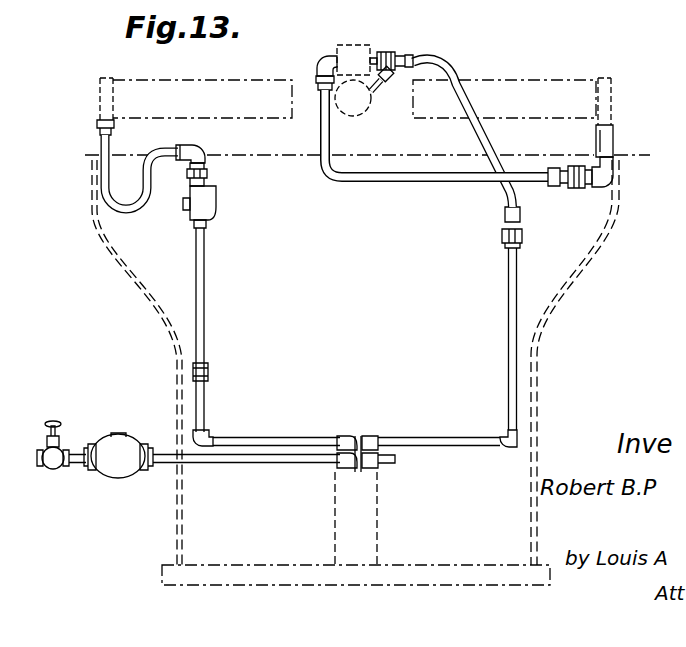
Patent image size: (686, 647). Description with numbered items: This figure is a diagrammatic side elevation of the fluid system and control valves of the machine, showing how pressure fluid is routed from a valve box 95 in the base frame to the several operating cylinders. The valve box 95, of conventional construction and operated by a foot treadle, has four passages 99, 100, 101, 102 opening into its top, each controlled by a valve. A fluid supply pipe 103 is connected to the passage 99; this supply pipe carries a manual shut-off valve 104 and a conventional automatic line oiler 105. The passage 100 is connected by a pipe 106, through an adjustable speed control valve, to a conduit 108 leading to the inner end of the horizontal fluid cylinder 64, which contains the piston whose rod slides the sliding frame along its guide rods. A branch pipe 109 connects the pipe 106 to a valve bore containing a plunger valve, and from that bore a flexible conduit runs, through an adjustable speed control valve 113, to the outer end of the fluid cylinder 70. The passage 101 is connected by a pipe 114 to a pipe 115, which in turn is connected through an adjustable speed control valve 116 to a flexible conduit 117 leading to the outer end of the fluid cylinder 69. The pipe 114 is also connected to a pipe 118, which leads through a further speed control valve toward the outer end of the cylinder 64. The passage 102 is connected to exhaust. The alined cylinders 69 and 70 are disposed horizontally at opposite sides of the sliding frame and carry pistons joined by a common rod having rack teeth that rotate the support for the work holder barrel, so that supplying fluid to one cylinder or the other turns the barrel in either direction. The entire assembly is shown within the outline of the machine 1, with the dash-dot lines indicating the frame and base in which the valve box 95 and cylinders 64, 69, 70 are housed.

The fixture body 1 is at (545, 392).
The horizontal cylinder 64 is at (372, 108).
The cylinder 69 is at (212, 80).
The cylinder 70 is at (503, 80).
The valve box 95 is at (380, 530).
The passage 99 is at (340, 466).
The passage 100 is at (385, 465).
The passage 101 is at (355, 438).
The passage 102 is at (372, 452).
The fluid supply pipe 103 is at (282, 462).
The manual shut-off valve 104 is at (55, 465).
The automatic line oiler 105 is at (125, 466).
The pipe 106 is at (427, 436).
The conduit 108 is at (400, 74).
The branch pipe 109 is at (384, 54).
The adjustable speed control valve 113 is at (615, 126).
The pipe 114 is at (266, 436).
The pipe 115 is at (204, 290).
The adjustable speed control valve 116 is at (216, 197).
The flexible conduit 117 is at (100, 196).
The pipe 118 is at (210, 370).